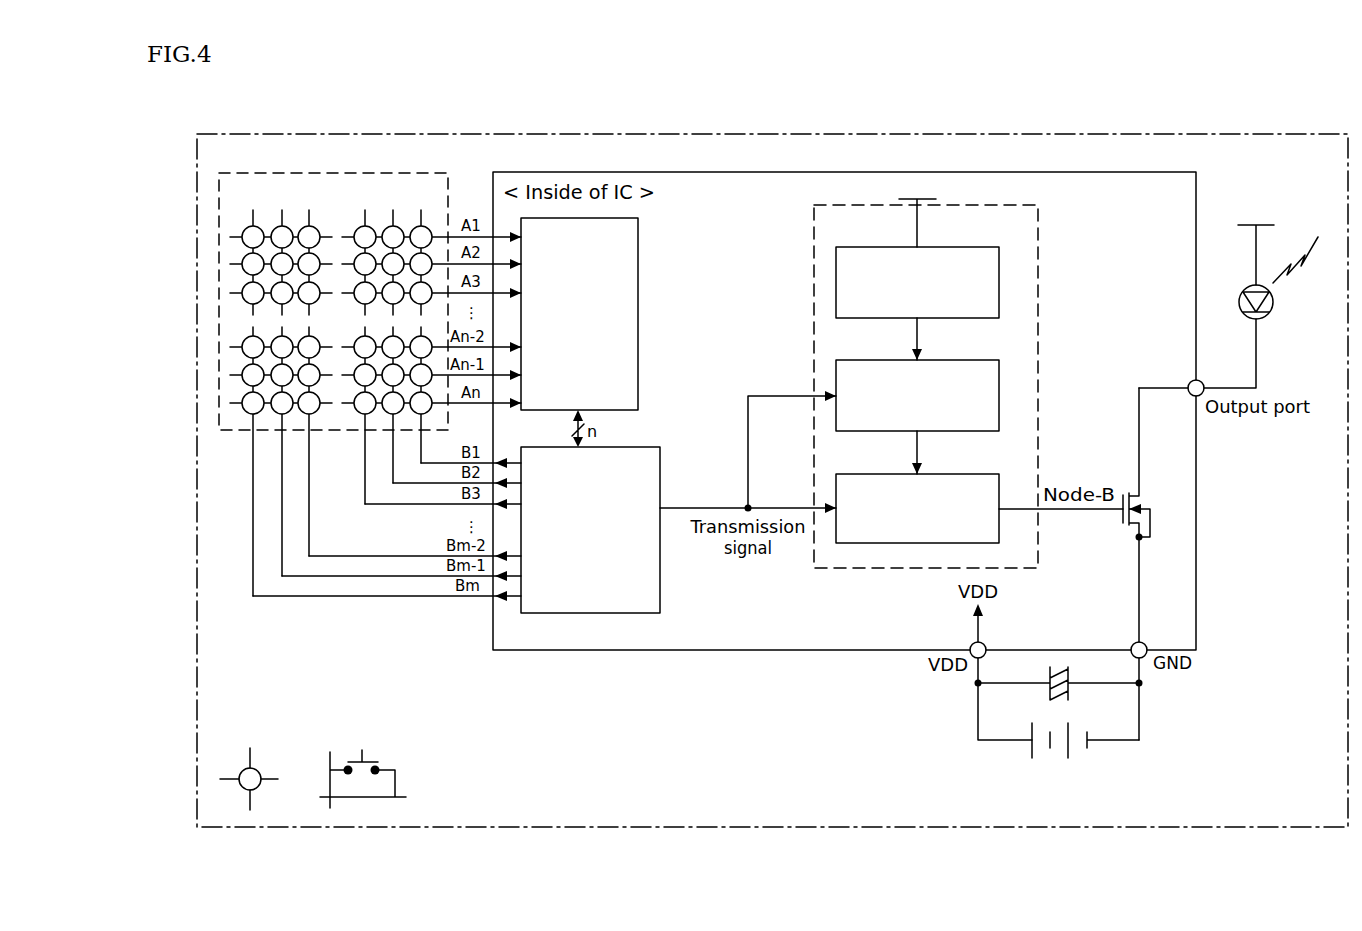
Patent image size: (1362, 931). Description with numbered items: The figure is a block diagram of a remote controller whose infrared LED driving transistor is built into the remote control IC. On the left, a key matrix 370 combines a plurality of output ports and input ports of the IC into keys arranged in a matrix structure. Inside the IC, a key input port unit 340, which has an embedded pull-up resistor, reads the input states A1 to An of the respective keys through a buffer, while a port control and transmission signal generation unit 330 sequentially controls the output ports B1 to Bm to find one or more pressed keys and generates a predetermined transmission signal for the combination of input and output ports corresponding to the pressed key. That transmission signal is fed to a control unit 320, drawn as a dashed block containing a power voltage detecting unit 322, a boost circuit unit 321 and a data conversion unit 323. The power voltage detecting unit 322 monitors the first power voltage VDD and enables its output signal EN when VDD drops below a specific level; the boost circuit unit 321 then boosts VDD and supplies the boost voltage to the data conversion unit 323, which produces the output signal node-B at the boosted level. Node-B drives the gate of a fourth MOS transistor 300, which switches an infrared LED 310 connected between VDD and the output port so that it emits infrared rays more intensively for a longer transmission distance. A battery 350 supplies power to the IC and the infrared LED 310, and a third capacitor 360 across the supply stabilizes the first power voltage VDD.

The 4th MOS transistor 300 is at (1153, 515).
The infrared LED 310 is at (1262, 260).
The control unit 320 is at (956, 372).
The boost circuit unit 321 is at (853, 360).
The power voltage detecting unit 322 is at (853, 247).
The data conversion unit 323 is at (853, 474).
The port control and transmission signal generation unit 330 is at (647, 447).
The key input port unit 340 is at (638, 250).
The battery 350 is at (1028, 761).
The third capacitor 360 is at (1047, 698).
The key matrix 370 is at (228, 431).